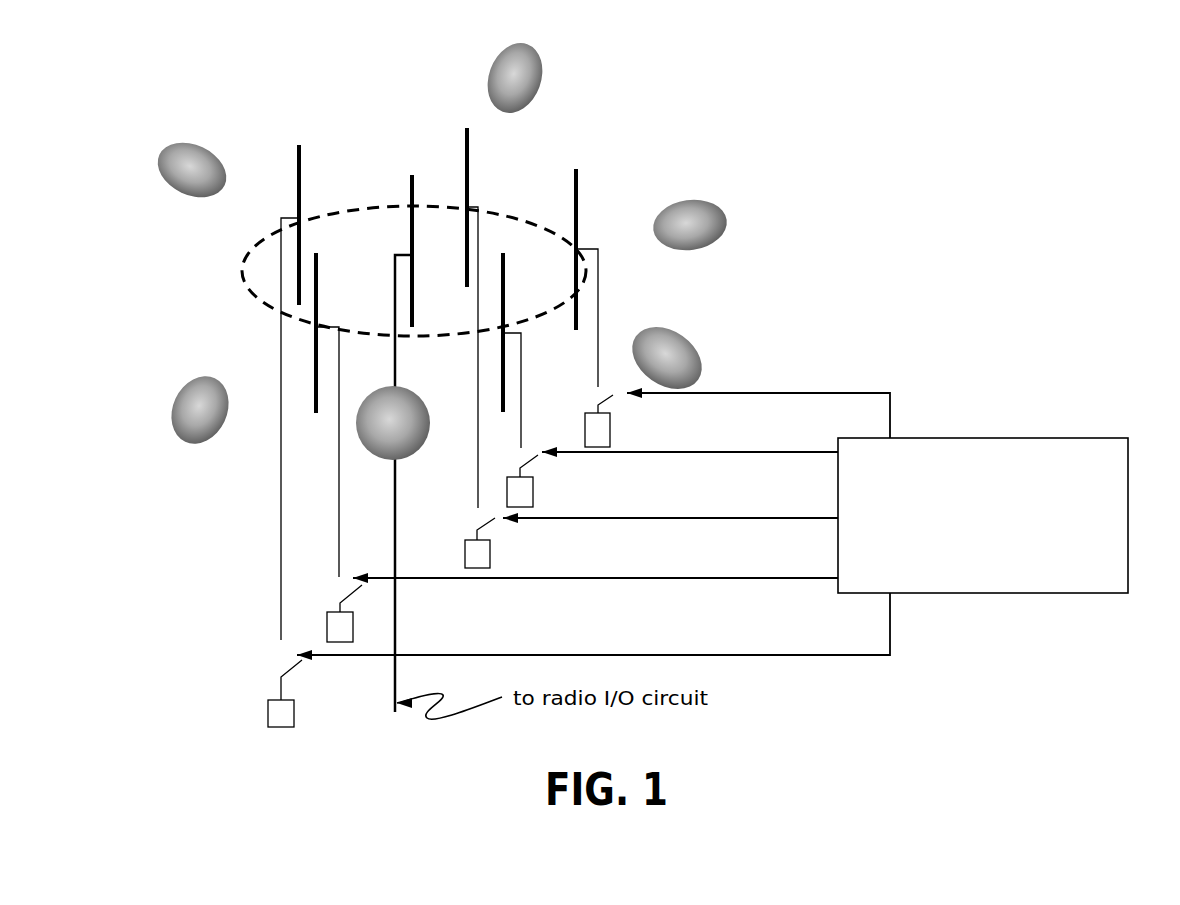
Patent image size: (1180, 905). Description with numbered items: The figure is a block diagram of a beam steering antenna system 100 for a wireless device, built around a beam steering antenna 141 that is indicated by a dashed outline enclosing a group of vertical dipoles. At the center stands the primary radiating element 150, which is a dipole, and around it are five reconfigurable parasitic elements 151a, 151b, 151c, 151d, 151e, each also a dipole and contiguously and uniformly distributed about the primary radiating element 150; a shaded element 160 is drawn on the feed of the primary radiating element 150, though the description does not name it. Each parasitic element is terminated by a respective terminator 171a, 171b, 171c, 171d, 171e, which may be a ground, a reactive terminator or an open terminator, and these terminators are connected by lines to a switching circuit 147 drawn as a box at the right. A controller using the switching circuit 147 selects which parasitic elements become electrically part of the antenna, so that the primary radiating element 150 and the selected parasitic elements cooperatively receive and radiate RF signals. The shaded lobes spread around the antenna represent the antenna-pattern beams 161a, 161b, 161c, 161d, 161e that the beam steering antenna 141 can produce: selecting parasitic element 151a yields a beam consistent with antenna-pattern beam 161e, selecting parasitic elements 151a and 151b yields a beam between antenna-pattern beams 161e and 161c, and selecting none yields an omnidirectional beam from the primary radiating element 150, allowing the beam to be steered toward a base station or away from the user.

The beam steering antenna system 100 is at (927, 89).
The beam steering antenna 141 is at (242, 270).
The switching circuit 147 is at (1012, 460).
The primary radiating element 150 is at (415, 193).
The parasitic element 151a is at (302, 157).
The parasitic element 151b is at (317, 267).
The parasitic element 151c is at (469, 183).
The parasitic element 151d is at (504, 292).
The parasitic element 151e is at (578, 192).
The object 160 is at (400, 392).
The antenna-pattern beam 161a is at (173, 188).
The antenna-pattern beam 161b is at (178, 415).
The antenna-pattern beam 161c is at (535, 78).
The antenna-pattern beam 161d is at (683, 348).
The antenna-pattern beam 161e is at (717, 217).
The terminator 171a is at (268, 712).
The terminator 171b is at (343, 628).
The terminator 171c is at (490, 563).
The terminator 171d is at (563, 491).
The terminator 171e is at (610, 437).